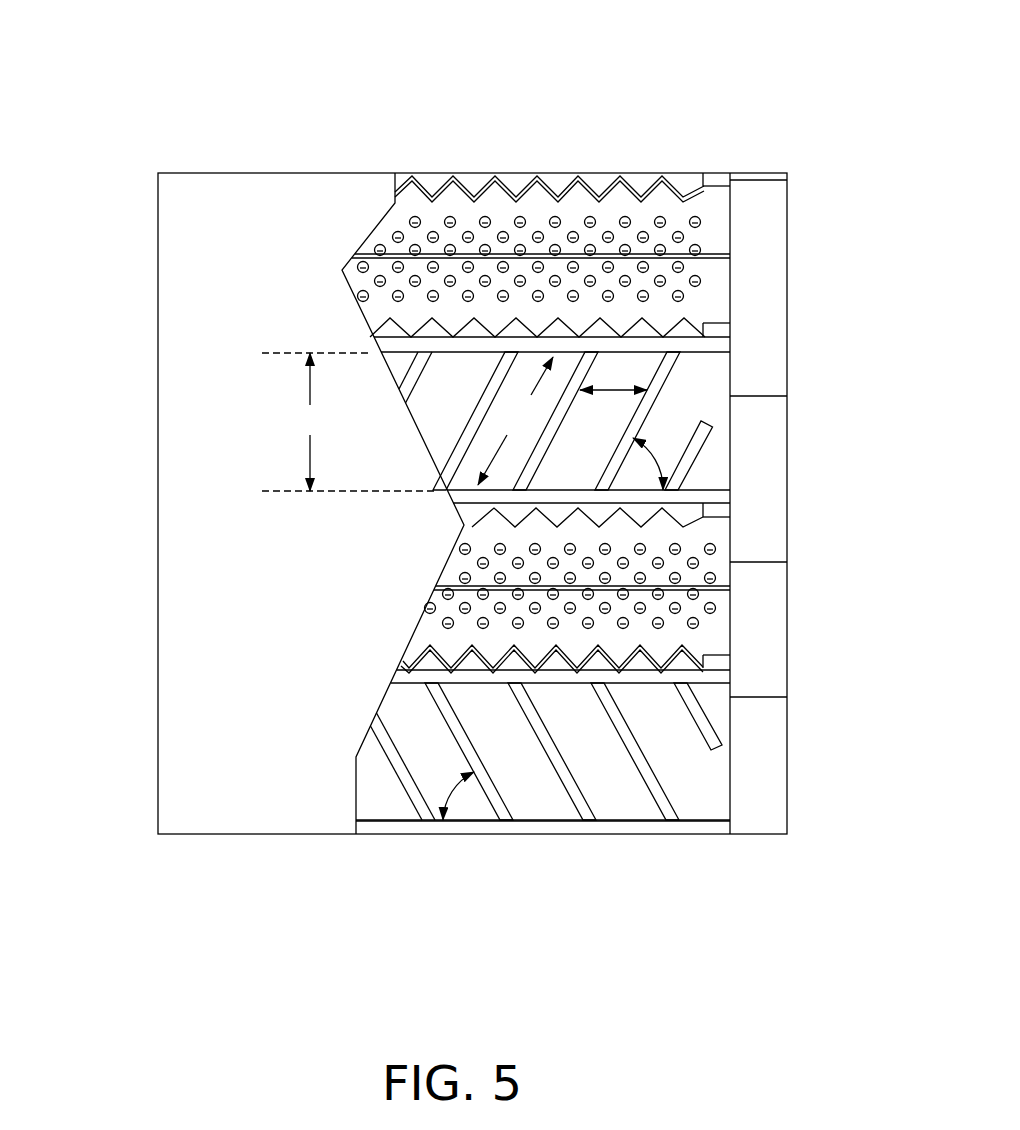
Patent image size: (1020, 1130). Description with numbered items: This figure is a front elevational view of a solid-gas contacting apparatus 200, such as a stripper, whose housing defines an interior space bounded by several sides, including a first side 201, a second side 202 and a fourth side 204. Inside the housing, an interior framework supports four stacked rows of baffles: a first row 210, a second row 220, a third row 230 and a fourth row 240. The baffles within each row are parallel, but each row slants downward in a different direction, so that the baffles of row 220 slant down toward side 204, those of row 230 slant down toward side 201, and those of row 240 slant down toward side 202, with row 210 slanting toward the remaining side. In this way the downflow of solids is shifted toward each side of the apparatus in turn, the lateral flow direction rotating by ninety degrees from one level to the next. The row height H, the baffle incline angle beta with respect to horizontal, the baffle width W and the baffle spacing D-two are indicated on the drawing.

The solid-gas contacting apparatus 200 is at (237, 97).
The first side 201 is at (307, 808).
The second side 202 is at (785, 812).
The fourth side 204 is at (158, 812).
The first row of baffles 210 is at (740, 266).
The second row of baffles 220 is at (700, 382).
The third row of baffles 230 is at (738, 540).
The fourth row of baffles 240 is at (700, 795).